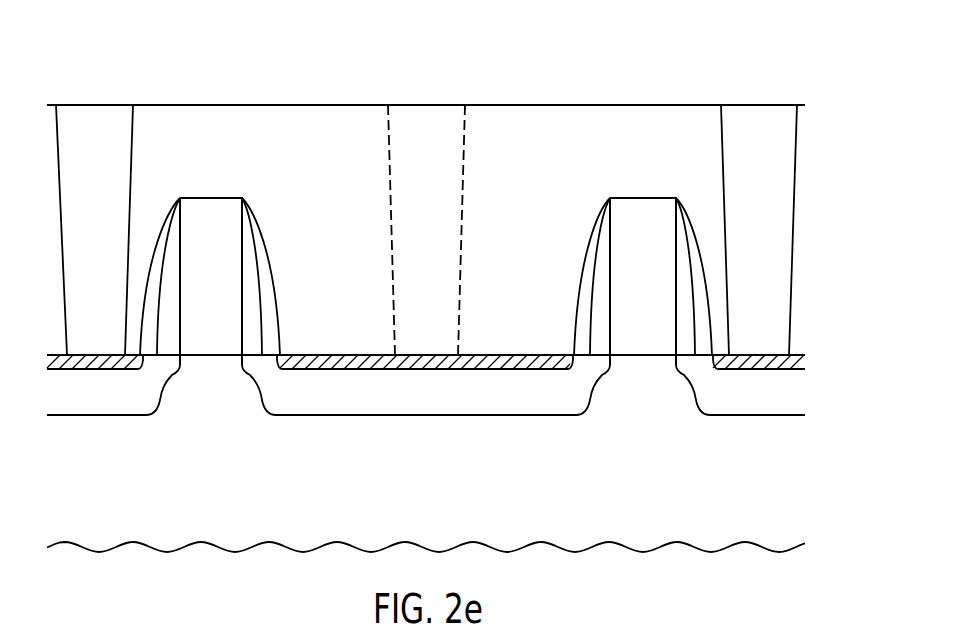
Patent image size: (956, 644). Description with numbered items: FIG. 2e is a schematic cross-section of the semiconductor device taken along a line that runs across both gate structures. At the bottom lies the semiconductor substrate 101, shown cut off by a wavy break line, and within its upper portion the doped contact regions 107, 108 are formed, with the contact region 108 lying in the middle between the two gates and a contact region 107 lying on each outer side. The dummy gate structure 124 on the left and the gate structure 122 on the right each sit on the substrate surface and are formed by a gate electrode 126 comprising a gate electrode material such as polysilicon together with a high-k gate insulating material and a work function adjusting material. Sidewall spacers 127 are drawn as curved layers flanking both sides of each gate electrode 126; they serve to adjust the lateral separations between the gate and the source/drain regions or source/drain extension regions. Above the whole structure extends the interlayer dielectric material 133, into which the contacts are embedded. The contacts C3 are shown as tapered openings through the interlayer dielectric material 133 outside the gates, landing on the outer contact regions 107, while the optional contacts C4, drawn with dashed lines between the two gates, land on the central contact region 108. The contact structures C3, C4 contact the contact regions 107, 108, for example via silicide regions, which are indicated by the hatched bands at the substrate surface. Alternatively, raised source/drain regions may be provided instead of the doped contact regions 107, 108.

The semiconductor substrate 101 is at (449, 513).
The contact region 107 is at (78, 407).
The contact region 108 is at (450, 408).
The gate electrode 126 is at (231, 313).
The sidewall spacers 127 is at (275, 236).
The dummy gate structure 124 is at (233, 192).
The gate structure 122 is at (613, 191).
The interlayer dielectric material 133 is at (700, 105).
The contacts C3 is at (81, 213).
The optional contacts C4 is at (409, 213).